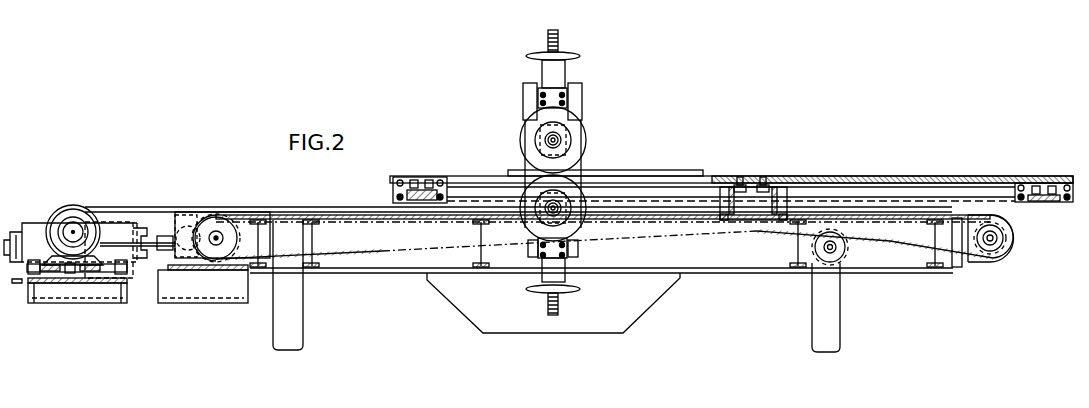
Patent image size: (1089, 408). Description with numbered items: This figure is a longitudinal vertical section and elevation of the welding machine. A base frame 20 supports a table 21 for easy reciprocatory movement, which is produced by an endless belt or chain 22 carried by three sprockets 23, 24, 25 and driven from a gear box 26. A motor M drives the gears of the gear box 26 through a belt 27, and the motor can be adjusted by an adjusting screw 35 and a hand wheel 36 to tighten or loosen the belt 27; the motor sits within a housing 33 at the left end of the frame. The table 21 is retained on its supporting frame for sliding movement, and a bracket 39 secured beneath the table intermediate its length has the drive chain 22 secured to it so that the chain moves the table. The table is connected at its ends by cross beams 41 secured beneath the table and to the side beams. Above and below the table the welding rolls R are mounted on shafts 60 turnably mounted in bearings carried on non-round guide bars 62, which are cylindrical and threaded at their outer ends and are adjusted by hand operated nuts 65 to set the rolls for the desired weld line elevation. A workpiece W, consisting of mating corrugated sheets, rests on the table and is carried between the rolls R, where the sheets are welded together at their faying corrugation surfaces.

The base frame 20 is at (392, 277).
The table 21 is at (922, 177).
The endless belt or chain 22 is at (345, 222).
The sprocket 23 is at (218, 222).
The sprocket 24 is at (1003, 248).
The sprocket 25 is at (848, 252).
The gear box 26 is at (192, 213).
The belt 27 is at (147, 218).
The motor housing 33 is at (35, 228).
The adjusting screw 35 is at (55, 270).
The hand wheel 36 is at (18, 262).
The bracket 39 is at (740, 215).
The cross beams 41 is at (438, 183).
The shafts 60 is at (551, 140).
The guide bars 62 is at (547, 35).
The hand operated nuts 65 is at (570, 57).
The motor M is at (67, 205).
The welding rolls R is at (580, 152).
The workpiece W is at (690, 174).